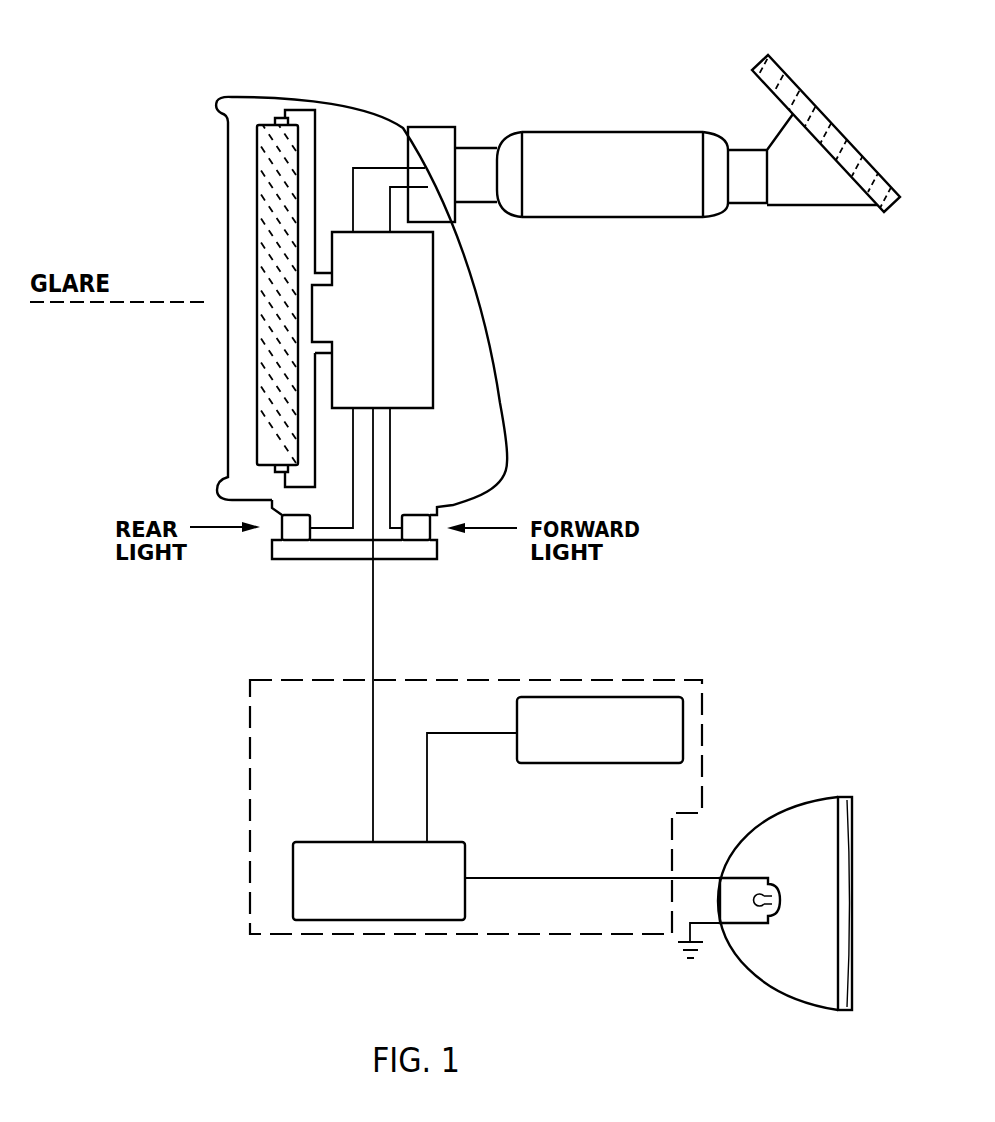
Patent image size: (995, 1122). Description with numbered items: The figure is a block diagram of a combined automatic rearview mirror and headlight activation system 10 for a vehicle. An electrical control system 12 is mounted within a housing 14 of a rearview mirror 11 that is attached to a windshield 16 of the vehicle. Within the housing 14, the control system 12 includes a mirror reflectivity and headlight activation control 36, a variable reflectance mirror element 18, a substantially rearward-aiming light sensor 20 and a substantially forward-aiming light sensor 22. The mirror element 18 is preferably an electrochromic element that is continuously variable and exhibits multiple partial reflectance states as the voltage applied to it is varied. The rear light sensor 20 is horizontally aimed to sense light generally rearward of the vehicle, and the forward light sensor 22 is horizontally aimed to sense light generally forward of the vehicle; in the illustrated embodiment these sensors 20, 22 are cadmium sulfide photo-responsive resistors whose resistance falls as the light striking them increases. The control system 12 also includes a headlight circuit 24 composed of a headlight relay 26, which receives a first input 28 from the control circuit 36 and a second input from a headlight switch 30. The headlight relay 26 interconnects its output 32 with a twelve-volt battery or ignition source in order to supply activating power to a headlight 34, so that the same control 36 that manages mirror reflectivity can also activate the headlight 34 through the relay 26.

The combined automatic rearview mirror and headlight activation system 10 is at (490, 357).
The rearview mirror 11 is at (240, 95).
The electrical control system 12 is at (460, 627).
The housing 14 is at (358, 106).
The windshield 16 is at (792, 75).
The variable reflectance mirror element 18 is at (257, 190).
The rearward-aiming light sensor 20 is at (280, 528).
The forward-aiming light sensor 22 is at (437, 542).
The headlight circuit 24 is at (250, 770).
The headlight relay 26 is at (465, 903).
The first input 28 is at (373, 607).
The headlight switch 30 is at (575, 702).
The output 32 is at (505, 878).
The headlight 34 is at (788, 987).
The mirror reflectivity and headlight activation control 36 is at (433, 285).